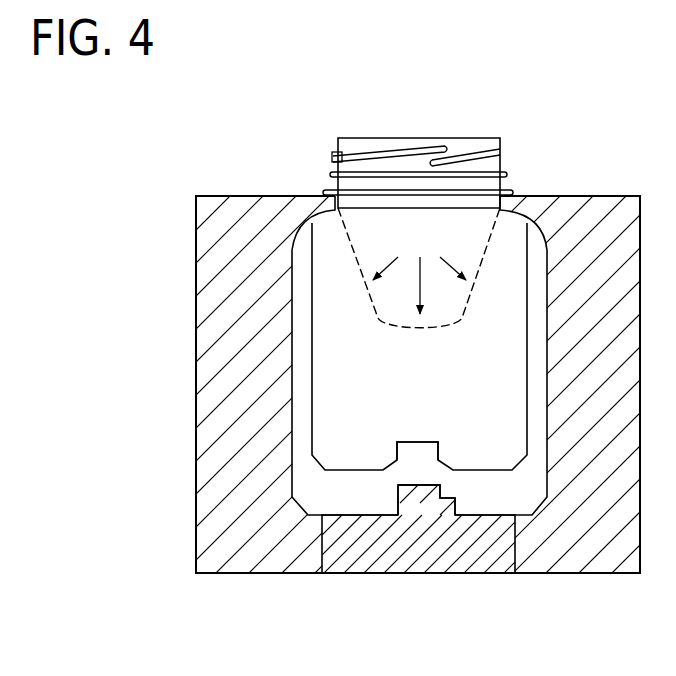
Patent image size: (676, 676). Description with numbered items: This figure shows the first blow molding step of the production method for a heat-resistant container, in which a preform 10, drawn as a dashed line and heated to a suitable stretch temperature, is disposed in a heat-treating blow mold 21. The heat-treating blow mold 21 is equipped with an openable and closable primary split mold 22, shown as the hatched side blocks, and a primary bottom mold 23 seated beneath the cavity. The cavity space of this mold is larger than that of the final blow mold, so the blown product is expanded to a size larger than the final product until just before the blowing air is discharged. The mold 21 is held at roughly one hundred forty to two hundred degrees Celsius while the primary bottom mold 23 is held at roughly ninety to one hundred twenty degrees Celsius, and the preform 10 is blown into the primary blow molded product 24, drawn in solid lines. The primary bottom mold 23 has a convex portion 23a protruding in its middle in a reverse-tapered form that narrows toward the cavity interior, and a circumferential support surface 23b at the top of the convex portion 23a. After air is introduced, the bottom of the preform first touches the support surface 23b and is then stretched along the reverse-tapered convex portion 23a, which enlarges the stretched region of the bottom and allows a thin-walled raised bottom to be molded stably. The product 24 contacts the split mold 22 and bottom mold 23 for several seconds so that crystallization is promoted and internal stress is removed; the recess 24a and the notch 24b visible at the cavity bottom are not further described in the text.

The preform 10 is at (392, 326).
The heat-treating blow mold 21 is at (192, 188).
The primary split mold 22 is at (238, 205).
The primary bottom mold 23 is at (408, 575).
The convex portion 23a is at (458, 505).
The circumferential support surface 23b is at (425, 482).
The primary blow molded product 24 is at (308, 352).
The cavity recess 24a is at (352, 475).
The cavity bottom notch 24b is at (397, 463).